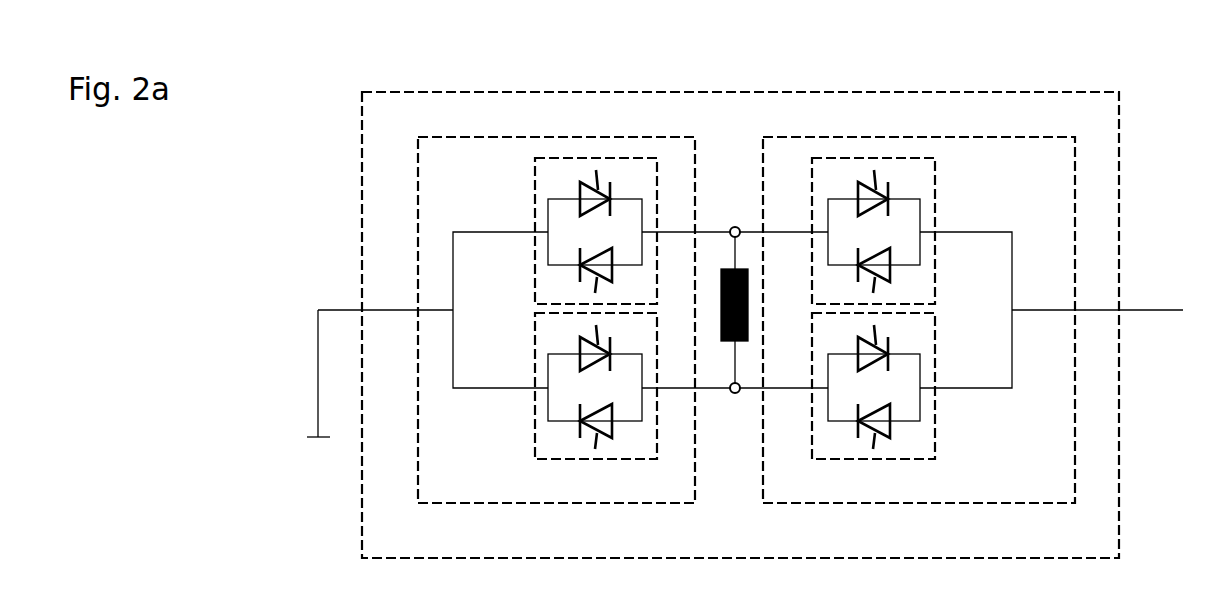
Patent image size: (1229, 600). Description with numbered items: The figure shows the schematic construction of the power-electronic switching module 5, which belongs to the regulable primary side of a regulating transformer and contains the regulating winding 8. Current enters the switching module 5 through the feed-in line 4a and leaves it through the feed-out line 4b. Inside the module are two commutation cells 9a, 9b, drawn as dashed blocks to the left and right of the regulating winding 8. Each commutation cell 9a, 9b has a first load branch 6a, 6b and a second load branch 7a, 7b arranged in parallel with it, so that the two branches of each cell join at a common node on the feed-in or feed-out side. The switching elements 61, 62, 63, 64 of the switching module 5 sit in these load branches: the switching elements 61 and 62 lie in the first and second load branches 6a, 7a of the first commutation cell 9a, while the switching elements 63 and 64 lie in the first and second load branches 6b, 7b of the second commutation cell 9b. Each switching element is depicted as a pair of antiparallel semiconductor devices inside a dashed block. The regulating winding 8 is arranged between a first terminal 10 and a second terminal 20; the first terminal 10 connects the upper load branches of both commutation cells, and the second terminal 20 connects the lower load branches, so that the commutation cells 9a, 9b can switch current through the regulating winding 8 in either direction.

The switching module 5 is at (360, 138).
The feed-in line 4a is at (1143, 307).
The feed-out line 4b is at (348, 306).
The first commutation cell 9a is at (565, 130).
The second commutation cell 9b is at (918, 130).
The switching element 61 is at (533, 190).
The switching element 62 is at (528, 415).
The switching element 63 is at (807, 192).
The switching element 64 is at (808, 413).
The first load branch 6a is at (510, 223).
The first load branch 6b is at (987, 224).
The second load branch 7a is at (495, 395).
The second load branch 7b is at (995, 402).
The first terminal 10 is at (735, 224).
The second terminal 20 is at (735, 395).
The regulating winding 8 is at (727, 310).